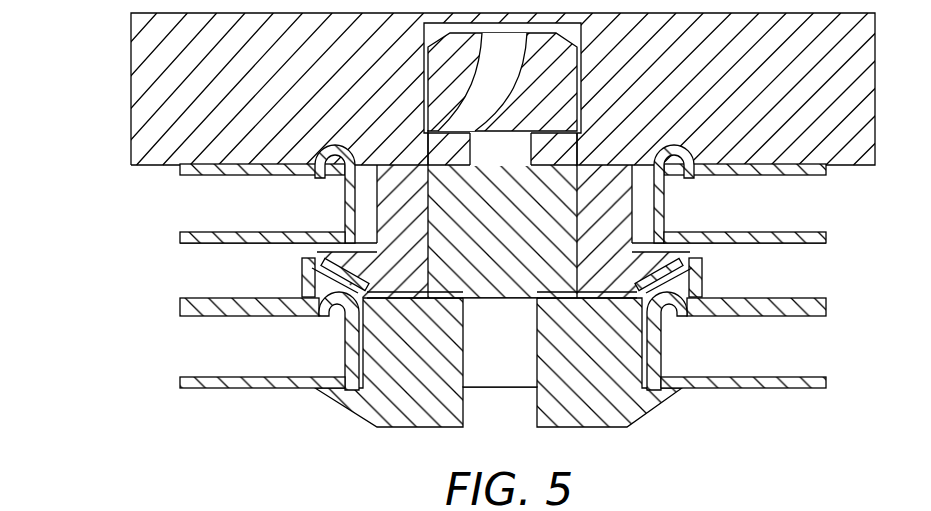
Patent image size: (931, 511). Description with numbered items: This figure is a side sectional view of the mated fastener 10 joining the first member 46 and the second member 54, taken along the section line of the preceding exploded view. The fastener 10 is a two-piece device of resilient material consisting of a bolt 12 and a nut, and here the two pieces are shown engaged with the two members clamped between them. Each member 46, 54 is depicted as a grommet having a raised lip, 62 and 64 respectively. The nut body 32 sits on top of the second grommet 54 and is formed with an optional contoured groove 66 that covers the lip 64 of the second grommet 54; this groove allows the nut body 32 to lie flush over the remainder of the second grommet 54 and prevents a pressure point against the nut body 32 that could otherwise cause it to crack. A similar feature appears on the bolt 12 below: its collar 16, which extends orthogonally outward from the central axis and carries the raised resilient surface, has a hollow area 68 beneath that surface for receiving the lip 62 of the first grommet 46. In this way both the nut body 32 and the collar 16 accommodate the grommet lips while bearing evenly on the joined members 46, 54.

The fastener 10 is at (97, 78).
The bolt 12 is at (358, 417).
The nut body 32 is at (131, 112).
The contoured groove 66 is at (345, 146).
The raised lip 64 is at (338, 180).
The second member 54 is at (213, 203).
The hollow area 68 is at (312, 278).
The collar 16 is at (180, 300).
The raised lip 62 is at (327, 318).
The first member 46 is at (213, 360).